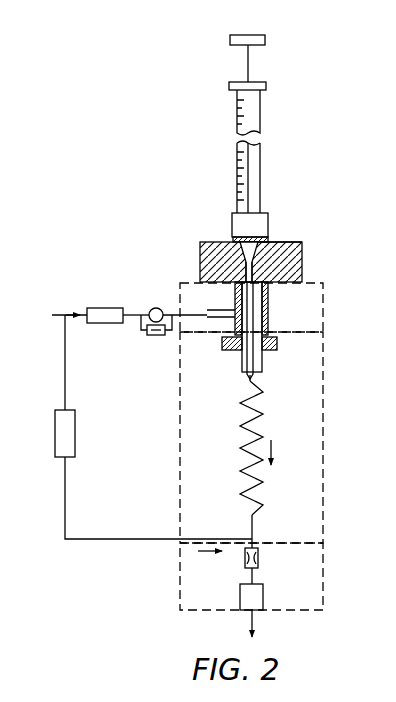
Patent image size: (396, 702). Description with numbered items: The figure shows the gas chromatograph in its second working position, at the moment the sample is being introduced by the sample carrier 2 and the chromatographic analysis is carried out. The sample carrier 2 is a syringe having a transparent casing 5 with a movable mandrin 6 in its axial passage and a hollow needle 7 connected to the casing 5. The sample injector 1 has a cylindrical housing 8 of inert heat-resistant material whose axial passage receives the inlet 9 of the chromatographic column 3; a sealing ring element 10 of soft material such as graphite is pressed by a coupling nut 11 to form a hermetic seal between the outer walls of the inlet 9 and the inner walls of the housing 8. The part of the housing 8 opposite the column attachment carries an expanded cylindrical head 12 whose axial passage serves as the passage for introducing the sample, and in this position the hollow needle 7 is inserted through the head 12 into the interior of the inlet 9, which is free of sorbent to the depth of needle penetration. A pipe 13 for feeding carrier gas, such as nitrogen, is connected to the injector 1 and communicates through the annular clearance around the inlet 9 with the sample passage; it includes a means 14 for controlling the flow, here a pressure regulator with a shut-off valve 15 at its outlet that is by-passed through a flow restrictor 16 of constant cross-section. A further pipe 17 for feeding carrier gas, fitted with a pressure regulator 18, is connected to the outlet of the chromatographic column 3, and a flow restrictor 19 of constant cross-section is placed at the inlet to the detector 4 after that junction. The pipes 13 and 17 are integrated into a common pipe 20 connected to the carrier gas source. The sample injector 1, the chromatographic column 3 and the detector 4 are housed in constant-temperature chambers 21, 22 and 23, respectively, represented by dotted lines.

The sample injector 1 is at (303, 257).
The sample carrier 2 is at (236, 172).
The chromatographic column 3 is at (239, 447).
The detector 4 is at (264, 597).
The casing 5 is at (260, 187).
The mandrin 6 is at (249, 74).
The hollow needle 7 is at (266, 292).
The housing 8 is at (269, 318).
The inlet of the chromatographic column 9 is at (248, 381).
The sealing ring element 10 is at (238, 351).
The coupling nut 11 is at (277, 351).
The expanded cylindrical head 12 is at (282, 243).
The pipe for feeding carrier gas 13 is at (208, 312).
The means for controlling the flow of carrier gas 14 is at (100, 307).
The shut-off valve 15 is at (157, 307).
The flow restrictor 16 is at (152, 337).
The additional pipe for feeding carrier gas 17 is at (68, 528).
The pressure regulator 18 is at (77, 441).
The flow restrictor 19 is at (259, 560).
The common pipe for feeding carrier gas 20 is at (57, 318).
The constant-temperature chamber 21 is at (325, 305).
The constant-temperature chamber 22 is at (325, 462).
The constant-temperature chamber 23 is at (325, 584).